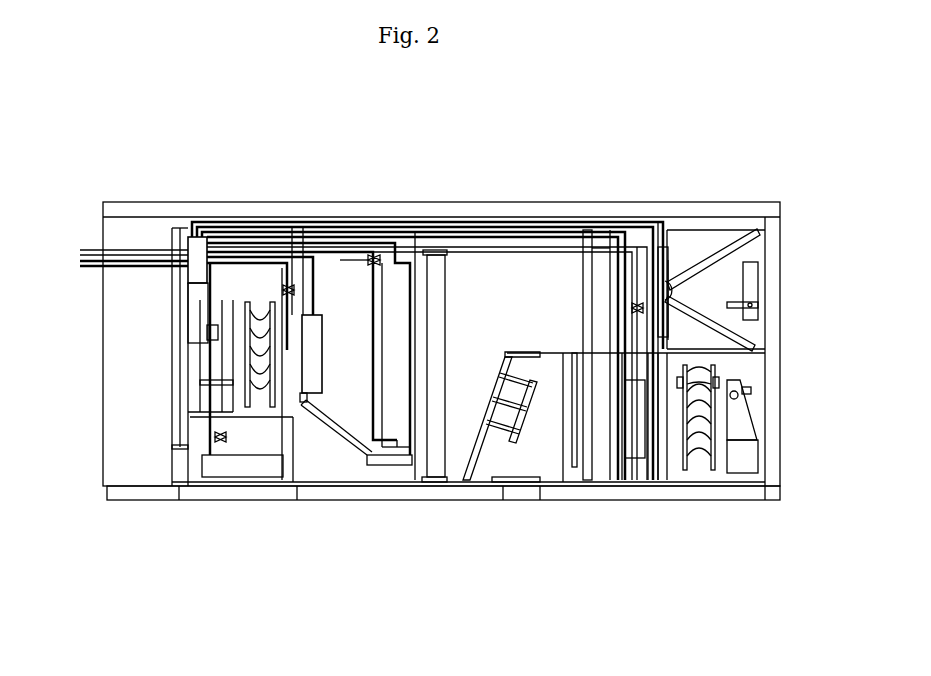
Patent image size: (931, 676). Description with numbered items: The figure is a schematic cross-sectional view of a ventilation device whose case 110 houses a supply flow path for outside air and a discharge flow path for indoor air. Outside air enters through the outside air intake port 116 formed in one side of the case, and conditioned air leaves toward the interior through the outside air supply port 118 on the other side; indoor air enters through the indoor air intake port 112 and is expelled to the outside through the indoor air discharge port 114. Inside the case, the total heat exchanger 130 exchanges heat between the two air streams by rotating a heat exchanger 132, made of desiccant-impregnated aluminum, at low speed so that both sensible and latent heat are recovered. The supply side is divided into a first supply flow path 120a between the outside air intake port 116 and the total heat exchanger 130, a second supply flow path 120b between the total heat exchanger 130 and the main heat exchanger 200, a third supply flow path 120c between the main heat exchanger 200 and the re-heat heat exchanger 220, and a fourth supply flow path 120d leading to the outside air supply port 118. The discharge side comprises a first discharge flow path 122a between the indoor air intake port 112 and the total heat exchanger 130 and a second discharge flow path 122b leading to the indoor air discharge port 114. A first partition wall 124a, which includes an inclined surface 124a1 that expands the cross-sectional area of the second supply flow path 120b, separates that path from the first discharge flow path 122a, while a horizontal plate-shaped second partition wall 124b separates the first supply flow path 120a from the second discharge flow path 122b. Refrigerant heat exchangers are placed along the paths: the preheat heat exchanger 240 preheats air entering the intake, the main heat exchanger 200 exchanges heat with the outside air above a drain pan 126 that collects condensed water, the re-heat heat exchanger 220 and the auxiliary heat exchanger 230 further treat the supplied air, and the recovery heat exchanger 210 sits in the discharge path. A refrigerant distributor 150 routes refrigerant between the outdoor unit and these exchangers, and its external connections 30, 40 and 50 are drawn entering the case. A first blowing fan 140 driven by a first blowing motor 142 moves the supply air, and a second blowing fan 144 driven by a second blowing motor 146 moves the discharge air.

The cold water supply pipe 30 is at (82, 259).
The hot water supply pipe 40 is at (82, 266).
The power line 50 is at (85, 250).
The case 110 is at (207, 212).
The indoor air intake port 112 is at (528, 491).
The indoor air discharge port 114 is at (720, 380).
The outside air intake port 116 is at (760, 297).
The outside air supply port 118 is at (240, 489).
The first supply flow path 120a is at (719, 244).
The second supply flow path 120b is at (544, 263).
The third supply flow path 120c is at (333, 293).
The fourth supply flow path 120d is at (243, 291).
The first discharge flow path 122a is at (544, 451).
The second discharge flow path 122b is at (672, 455).
The first partition wall 124a is at (520, 345).
The inclined surface 124a1 is at (473, 395).
The second partition wall 124b is at (713, 323).
The drain pan 126 is at (390, 460).
The total heat exchanger 130 is at (596, 267).
The heat exchanger 132 is at (602, 312).
The first blowing fan 140 is at (260, 392).
The first blowing motor 142 is at (213, 336).
The second blowing fan 144 is at (700, 450).
The second blowing motor 146 is at (753, 395).
The refrigerant distributor 150 is at (193, 262).
The main heat exchanger 200 is at (393, 285).
The recovery heat exchanger 210 is at (637, 428).
The re-heat heat exchanger 220 is at (312, 337).
The auxiliary heat exchanger 230 is at (252, 467).
The preheat heat exchanger 240 is at (675, 258).